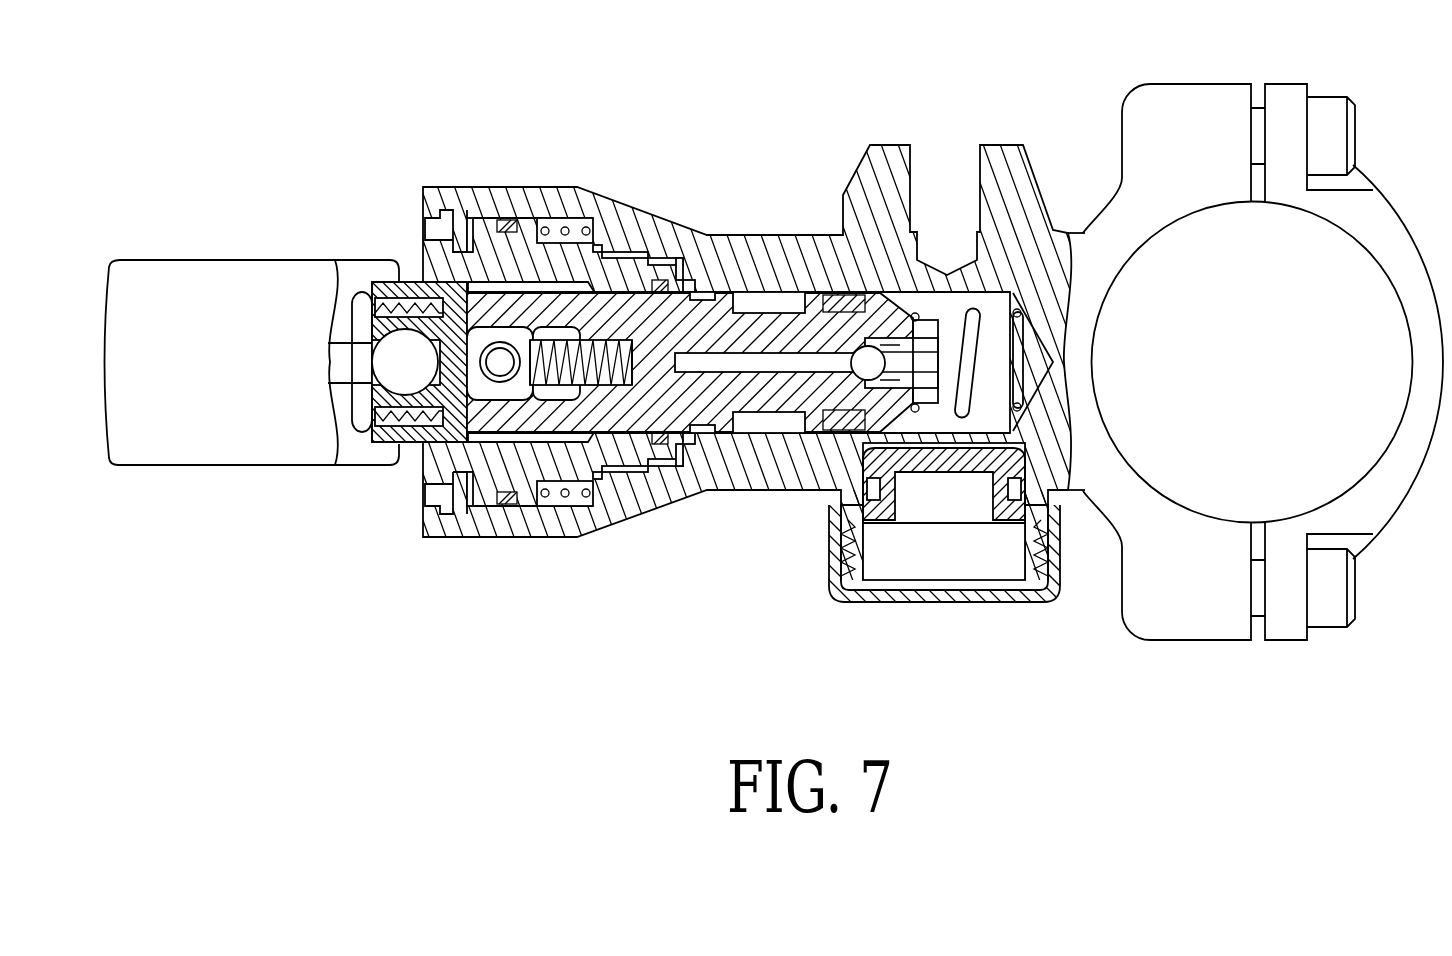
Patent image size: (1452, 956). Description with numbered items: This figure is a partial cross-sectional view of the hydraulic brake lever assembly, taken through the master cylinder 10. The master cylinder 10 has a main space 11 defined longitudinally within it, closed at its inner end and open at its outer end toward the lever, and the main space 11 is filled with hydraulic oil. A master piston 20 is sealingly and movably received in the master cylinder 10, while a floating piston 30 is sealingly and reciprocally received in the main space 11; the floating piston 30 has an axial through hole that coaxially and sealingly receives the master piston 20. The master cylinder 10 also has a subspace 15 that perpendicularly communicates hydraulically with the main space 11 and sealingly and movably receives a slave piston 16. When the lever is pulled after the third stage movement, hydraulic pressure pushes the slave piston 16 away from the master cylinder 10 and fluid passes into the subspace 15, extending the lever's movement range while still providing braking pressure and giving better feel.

The master cylinder 10 is at (787, 262).
The main space 11 is at (937, 305).
The subspace 15 is at (940, 558).
The slave piston 16 is at (880, 512).
The master piston 20 is at (636, 433).
The floating piston 30 is at (538, 256).